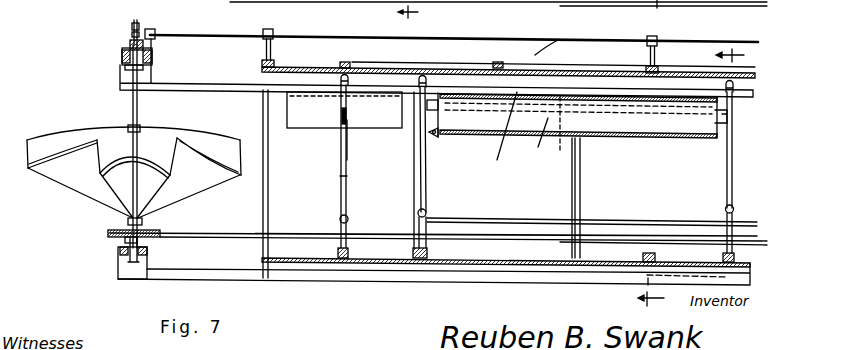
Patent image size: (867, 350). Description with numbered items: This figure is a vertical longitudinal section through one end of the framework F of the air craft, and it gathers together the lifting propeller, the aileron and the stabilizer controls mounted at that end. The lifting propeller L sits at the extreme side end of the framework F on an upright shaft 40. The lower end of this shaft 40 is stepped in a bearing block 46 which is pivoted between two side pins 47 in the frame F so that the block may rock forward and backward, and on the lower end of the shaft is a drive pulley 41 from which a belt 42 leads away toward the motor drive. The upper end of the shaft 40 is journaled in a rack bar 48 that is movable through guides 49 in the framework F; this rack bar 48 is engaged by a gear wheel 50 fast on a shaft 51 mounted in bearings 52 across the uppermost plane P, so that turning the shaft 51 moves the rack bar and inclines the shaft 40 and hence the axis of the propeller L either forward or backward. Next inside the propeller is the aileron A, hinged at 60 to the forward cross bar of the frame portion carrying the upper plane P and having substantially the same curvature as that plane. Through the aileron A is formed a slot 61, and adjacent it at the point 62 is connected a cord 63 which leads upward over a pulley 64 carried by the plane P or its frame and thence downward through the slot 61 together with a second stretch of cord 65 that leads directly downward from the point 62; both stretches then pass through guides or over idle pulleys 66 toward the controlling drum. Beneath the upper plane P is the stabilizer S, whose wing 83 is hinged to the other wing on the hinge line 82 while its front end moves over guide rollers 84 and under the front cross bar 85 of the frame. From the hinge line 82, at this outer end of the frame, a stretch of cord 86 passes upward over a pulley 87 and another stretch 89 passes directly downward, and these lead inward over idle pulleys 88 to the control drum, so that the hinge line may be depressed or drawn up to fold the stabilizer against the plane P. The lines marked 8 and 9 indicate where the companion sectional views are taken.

The upper fixed plane P is at (258, 74).
The shaft 51 is at (224, 35).
The bearings 52 is at (272, 31).
The gear wheel 50 is at (131, 24).
The rack bar 48 is at (121, 49).
The guides 49 is at (124, 55).
The upright shaft 40 is at (138, 110).
The hinge 60 is at (298, 72).
The pulley 64 is at (345, 76).
The second stretch of cord 65 is at (340, 187).
The slot 61 is at (354, 121).
The point 62 is at (334, 180).
The cord 63 is at (352, 92).
The idle pulleys 66 is at (349, 218).
The aileron A is at (309, 120).
The pulley 87 is at (428, 78).
The stretch of cord 89 is at (415, 173).
The idle pulleys 88 is at (427, 214).
The stabilizer S is at (598, 178).
The stretch of cord 86 is at (440, 125).
The hinge line 82 is at (440, 140).
The front cross bar 85 is at (500, 134).
The wing 83 is at (535, 146).
The guide rollers 84 is at (562, 160).
The lifting propeller L is at (134, 175).
The belt 42 is at (215, 232).
The drive pulley 41 is at (110, 234).
The framework F is at (118, 320).
The side pins 47 is at (120, 251).
The bearing block 46 is at (132, 252).
The section line 9 is at (408, 20).
The section line 8 is at (691, 170).